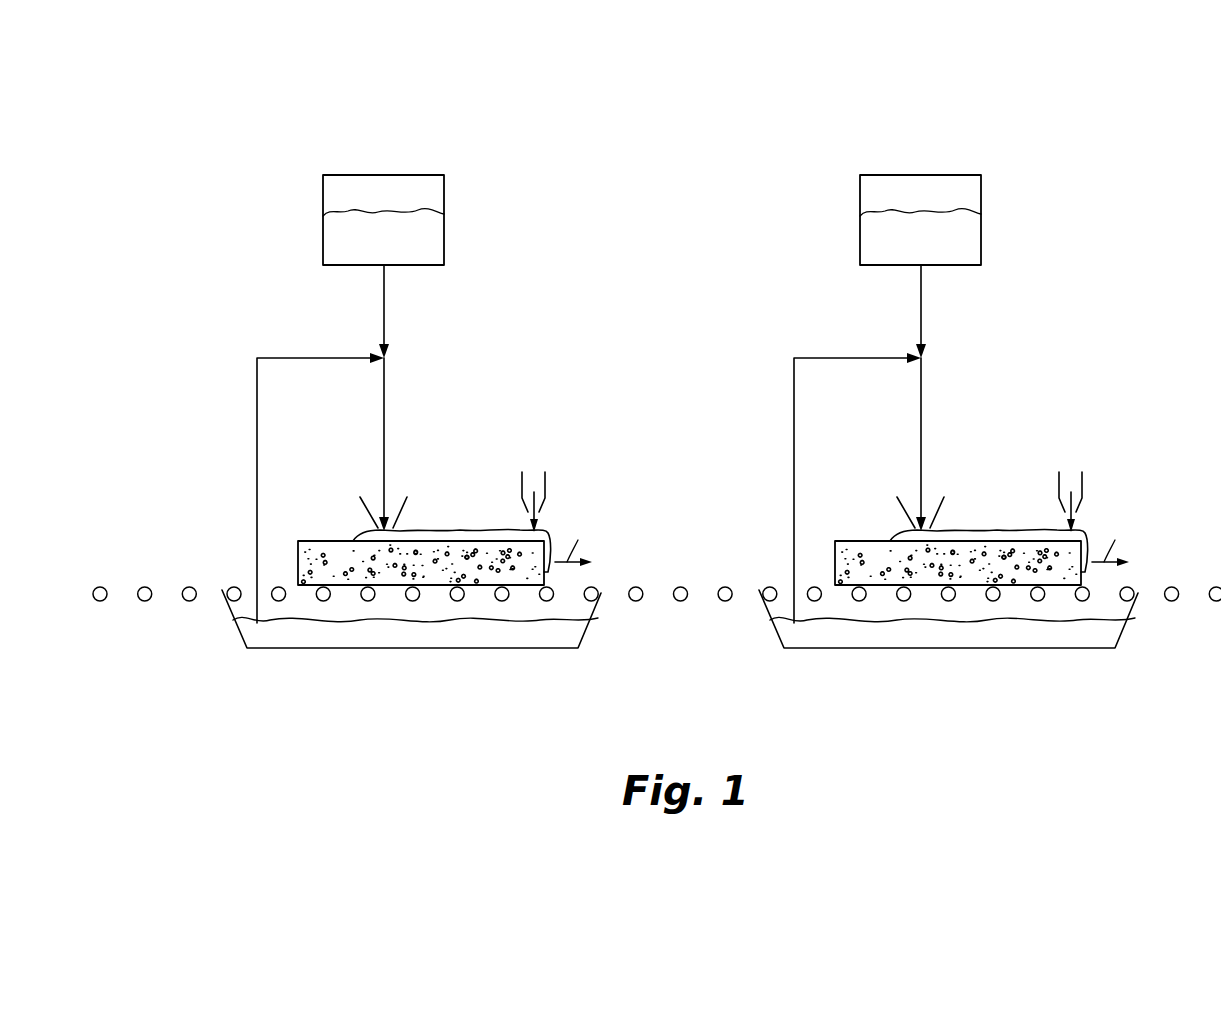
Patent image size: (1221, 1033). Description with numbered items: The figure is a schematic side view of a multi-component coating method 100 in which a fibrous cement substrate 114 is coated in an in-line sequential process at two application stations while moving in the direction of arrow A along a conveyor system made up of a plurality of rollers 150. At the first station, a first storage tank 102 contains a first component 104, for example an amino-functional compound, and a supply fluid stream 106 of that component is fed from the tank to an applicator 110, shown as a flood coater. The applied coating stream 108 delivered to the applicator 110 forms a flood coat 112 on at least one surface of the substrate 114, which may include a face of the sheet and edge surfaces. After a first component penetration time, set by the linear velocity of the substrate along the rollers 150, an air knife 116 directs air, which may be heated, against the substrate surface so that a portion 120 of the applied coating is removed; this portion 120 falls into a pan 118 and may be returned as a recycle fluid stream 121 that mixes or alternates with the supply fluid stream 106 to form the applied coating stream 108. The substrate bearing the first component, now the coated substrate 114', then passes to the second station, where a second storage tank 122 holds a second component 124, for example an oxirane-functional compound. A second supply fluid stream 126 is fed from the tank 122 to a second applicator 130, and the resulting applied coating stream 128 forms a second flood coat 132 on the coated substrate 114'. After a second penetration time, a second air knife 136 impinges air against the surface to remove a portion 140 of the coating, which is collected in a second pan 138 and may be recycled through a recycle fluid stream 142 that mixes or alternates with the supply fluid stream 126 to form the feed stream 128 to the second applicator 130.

The multi-component coating method 100 is at (608, 158).
The first storage tank 102 is at (340, 175).
The first component 104 is at (333, 216).
The supply fluid stream 106 is at (384, 330).
The applied coating stream 108 is at (384, 408).
The applicator 110 is at (398, 507).
The flood coat 112 is at (456, 530).
The substrate 114 is at (418, 539).
The coated substrate 114' is at (955, 539).
The air knife 116 is at (545, 488).
The pan 118 is at (596, 606).
The portion of applied coating 120 is at (240, 612).
The recycle fluid stream 121 is at (272, 358).
The second storage tank 122 is at (917, 192).
The second component 124 is at (883, 197).
The second supply fluid stream 126 is at (959, 311).
The second applied coating stream 128 is at (948, 444).
The second applicator 130 is at (952, 484).
The second flood coat 132 is at (989, 526).
The second air knife 136 is at (1106, 493).
The second pan 138 is at (971, 620).
The portion of second applied coating 140 is at (917, 632).
The second recycle fluid stream 142 is at (850, 466).
The rollers 150 is at (722, 585).